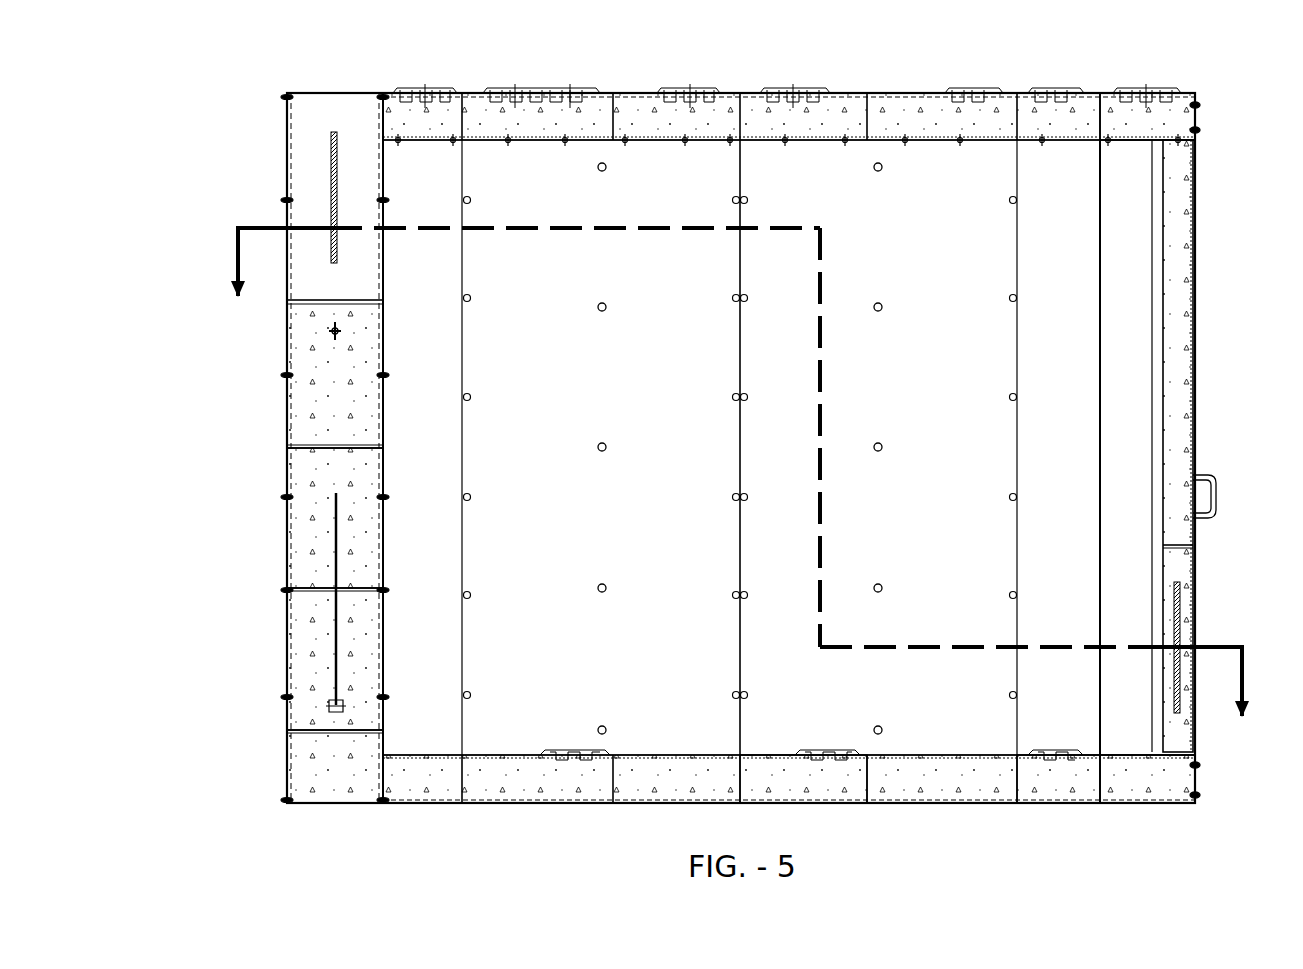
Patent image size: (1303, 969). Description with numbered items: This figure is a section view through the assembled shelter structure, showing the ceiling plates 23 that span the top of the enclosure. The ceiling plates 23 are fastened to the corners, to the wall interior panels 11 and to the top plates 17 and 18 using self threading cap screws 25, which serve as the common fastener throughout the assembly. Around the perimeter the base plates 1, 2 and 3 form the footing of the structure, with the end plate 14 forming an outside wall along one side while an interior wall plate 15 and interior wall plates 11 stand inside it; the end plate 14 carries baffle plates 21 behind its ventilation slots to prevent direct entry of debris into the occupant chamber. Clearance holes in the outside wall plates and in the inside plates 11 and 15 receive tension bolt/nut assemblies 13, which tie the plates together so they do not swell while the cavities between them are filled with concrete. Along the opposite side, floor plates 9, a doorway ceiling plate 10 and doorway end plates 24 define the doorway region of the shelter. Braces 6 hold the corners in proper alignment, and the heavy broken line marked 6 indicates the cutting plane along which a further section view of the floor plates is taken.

The base plate 1 is at (1079, 809).
The base plate 2 is at (840, 808).
The base plate 3 is at (333, 808).
The brace 6 is at (741, 500).
The floor plate 9 is at (510, 760).
The doorway ceiling plate 10 is at (1178, 128).
The interior wall plate 11 is at (972, 282).
The tension bolt/nut assembly 13 is at (594, 446).
The end plate 14 is at (283, 621).
The interior wall plate 15 is at (374, 370).
The top plate 17 is at (389, 86).
The top plate 18 is at (631, 87).
The baffle plate 21 is at (326, 188).
The ceiling plate 23 is at (474, 136).
The doorway end plate 24 is at (1203, 125).
The self threading cap screw 25 is at (1050, 154).